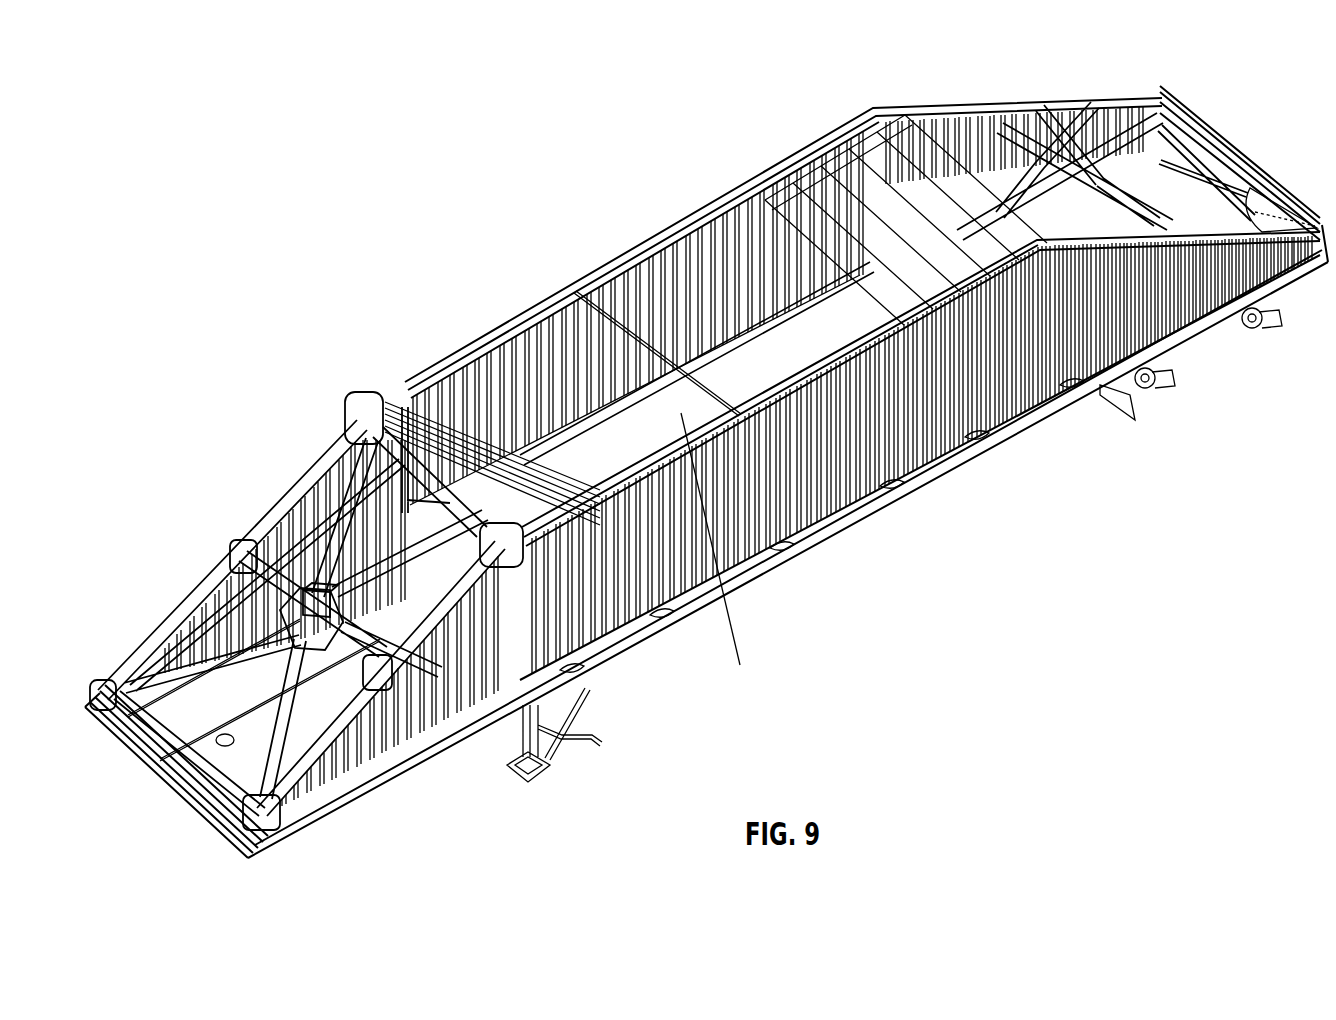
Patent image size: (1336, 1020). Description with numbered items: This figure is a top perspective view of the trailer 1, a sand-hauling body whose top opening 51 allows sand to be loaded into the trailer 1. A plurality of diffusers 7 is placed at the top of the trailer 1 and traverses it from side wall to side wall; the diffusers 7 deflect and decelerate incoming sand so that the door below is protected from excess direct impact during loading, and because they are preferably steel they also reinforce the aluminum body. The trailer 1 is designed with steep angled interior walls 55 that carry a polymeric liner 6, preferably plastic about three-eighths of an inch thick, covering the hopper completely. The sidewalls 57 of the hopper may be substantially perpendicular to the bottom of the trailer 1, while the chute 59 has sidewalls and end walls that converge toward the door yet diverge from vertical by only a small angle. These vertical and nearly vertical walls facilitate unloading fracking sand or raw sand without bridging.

The trailer 1 is at (877, 423).
The polymeric liner 6 is at (593, 330).
The diffusers 7 is at (667, 240).
The top opening 51 is at (790, 197).
The interior walls 55 is at (873, 220).
The sidewalls 57 is at (477, 380).
The chute 59 is at (721, 558).